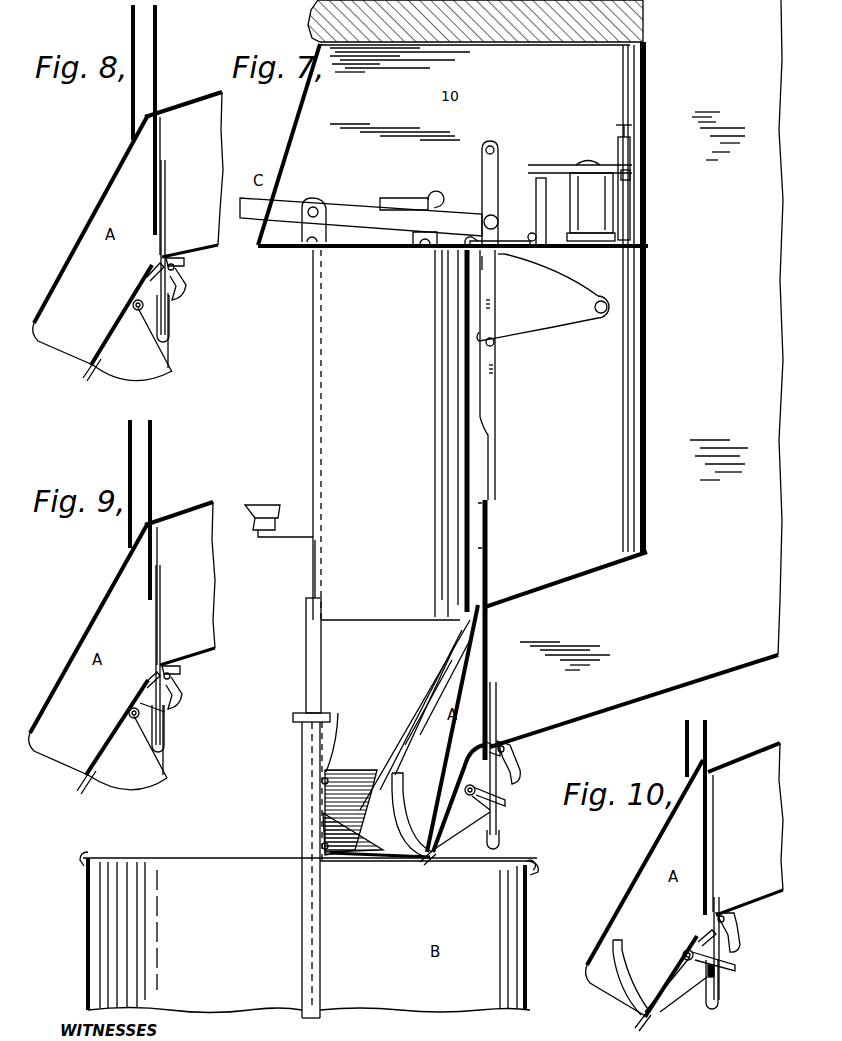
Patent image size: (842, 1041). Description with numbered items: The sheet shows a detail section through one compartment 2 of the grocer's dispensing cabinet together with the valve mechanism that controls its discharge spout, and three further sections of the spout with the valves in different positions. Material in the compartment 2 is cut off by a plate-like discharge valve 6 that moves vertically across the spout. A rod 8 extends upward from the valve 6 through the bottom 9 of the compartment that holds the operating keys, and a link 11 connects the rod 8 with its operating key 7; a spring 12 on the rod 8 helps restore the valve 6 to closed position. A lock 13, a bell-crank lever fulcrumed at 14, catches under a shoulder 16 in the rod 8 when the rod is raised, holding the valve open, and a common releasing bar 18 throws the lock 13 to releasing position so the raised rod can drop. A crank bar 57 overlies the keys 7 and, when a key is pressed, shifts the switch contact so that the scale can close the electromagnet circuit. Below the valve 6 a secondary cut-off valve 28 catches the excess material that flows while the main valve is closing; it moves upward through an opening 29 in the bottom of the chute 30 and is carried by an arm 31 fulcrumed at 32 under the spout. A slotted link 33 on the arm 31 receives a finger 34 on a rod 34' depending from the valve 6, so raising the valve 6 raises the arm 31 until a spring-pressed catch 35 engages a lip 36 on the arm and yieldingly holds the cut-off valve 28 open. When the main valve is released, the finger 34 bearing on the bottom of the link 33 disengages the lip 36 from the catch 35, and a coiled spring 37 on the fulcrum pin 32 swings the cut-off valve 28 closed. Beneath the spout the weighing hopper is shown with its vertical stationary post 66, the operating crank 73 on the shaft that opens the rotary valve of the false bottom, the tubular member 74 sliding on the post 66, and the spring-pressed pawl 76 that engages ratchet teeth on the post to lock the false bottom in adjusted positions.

In FIG. 7, the compartment 2 is at (634, 373).
In FIG. 7, the discharge valve 6 is at (489, 656).
In FIG. 8, the discharge valve 6 is at (160, 143).
In FIG. 9, the discharge valve 6 is at (155, 498).
In FIG. 10, the discharge valve 6 is at (703, 830).
In FIG. 7, the operating key 7 is at (293, 200).
In FIG. 7, the rod 8 is at (496, 302).
In FIG. 7, the bottom 9 is at (578, 250).
In FIG. 7, the link 11 is at (498, 196).
In FIG. 7, the spring 12 is at (550, 325).
In FIG. 7, the lock 13 is at (510, 241).
In FIG. 7, the fulcrum 14 is at (468, 248).
In FIG. 7, the shoulder 16 is at (495, 277).
In FIG. 7, the releasing bar 18 is at (530, 232).
In FIG. 7, the cut-off valve 28 is at (352, 775).
In FIG. 8, the cut-off valve 28 is at (130, 376).
In FIG. 9, the cut-off valve 28 is at (152, 787).
In FIG. 10, the cut-off valve 28 is at (624, 990).
In FIG. 7, the opening 29 is at (428, 862).
In FIG. 8, the opening 29 is at (97, 376).
In FIG. 9, the opening 29 is at (89, 785).
In FIG. 10, the opening 29 is at (652, 1026).
In FIG. 7, the chute 30 is at (442, 818).
In FIG. 8, the chute 30 is at (112, 330).
In FIG. 9, the chute 30 is at (108, 734).
In FIG. 10, the chute 30 is at (672, 972).
In FIG. 7, the arm 31 is at (499, 833).
In FIG. 8, the arm 31 is at (170, 355).
In FIG. 9, the arm 31 is at (166, 758).
In FIG. 10, the arm 31 is at (682, 1000).
In FIG. 7, the fulcrum pin 32 is at (470, 785).
In FIG. 8, the fulcrum pin 32 is at (136, 301).
In FIG. 9, the fulcrum pin 32 is at (132, 708).
In FIG. 10, the fulcrum pin 32 is at (688, 948).
In FIG. 8, the slotted link 33 is at (171, 318).
In FIG. 9, the slotted link 33 is at (166, 730).
In FIG. 10, the slotted link 33 is at (720, 998).
In FIG. 7, the finger 34 is at (512, 843).
In FIG. 9, the finger 34 is at (176, 711).
In FIG. 10, the finger 34 is at (731, 975).
In FIG. 7, the rod 34' is at (515, 758).
In FIG. 8, the rod 34' is at (179, 247).
In FIG. 9, the rod 34' is at (178, 655).
In FIG. 10, the rod 34' is at (738, 940).
In FIG. 7, the spring-pressed catch 35 is at (520, 777).
In FIG. 8, the spring-pressed catch 35 is at (190, 294).
In FIG. 9, the spring-pressed catch 35 is at (184, 690).
In FIG. 10, the spring-pressed catch 35 is at (742, 930).
In FIG. 7, the lip 36 is at (500, 805).
In FIG. 8, the lip 36 is at (180, 274).
In FIG. 9, the lip 36 is at (182, 672).
In FIG. 10, the lip 36 is at (722, 975).
In FIG. 7, the coiled spring 37 is at (502, 751).
In FIG. 8, the coiled spring 37 is at (150, 272).
In FIG. 9, the coiled spring 37 is at (147, 678).
In FIG. 10, the coiled spring 37 is at (708, 938).
In FIG. 7, the crank bar 57 is at (382, 197).
In FIG. 7, the stationary post 66 is at (306, 655).
In FIG. 7, the operating crank 73 is at (289, 538).
In FIG. 7, the tubular member 74 is at (302, 820).
In FIG. 7, the spring-pressed pawl 76 is at (334, 862).